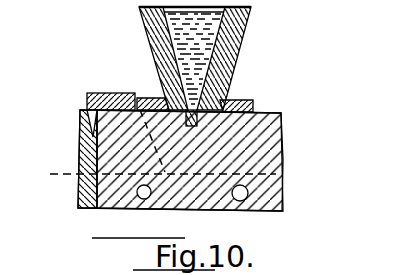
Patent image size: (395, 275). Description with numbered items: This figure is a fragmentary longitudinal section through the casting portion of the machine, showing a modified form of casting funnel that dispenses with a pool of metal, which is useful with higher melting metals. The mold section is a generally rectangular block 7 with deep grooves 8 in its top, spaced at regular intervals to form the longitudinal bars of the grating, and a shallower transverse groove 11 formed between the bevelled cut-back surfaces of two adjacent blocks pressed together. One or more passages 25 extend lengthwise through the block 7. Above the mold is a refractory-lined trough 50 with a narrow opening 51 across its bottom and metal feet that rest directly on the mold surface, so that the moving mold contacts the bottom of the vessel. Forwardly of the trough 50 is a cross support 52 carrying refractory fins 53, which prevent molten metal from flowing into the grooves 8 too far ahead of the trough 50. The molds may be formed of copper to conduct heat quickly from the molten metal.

The rectangular block 7 is at (116, 202).
The deep grooves 8 is at (155, 150).
The transverse groove 11 is at (197, 130).
The passages 25 is at (248, 192).
The refractory-lined trough 50 is at (232, 63).
The narrow opening 51 is at (160, 97).
The cross support 52 is at (87, 97).
The refractory fins 53 is at (78, 137).